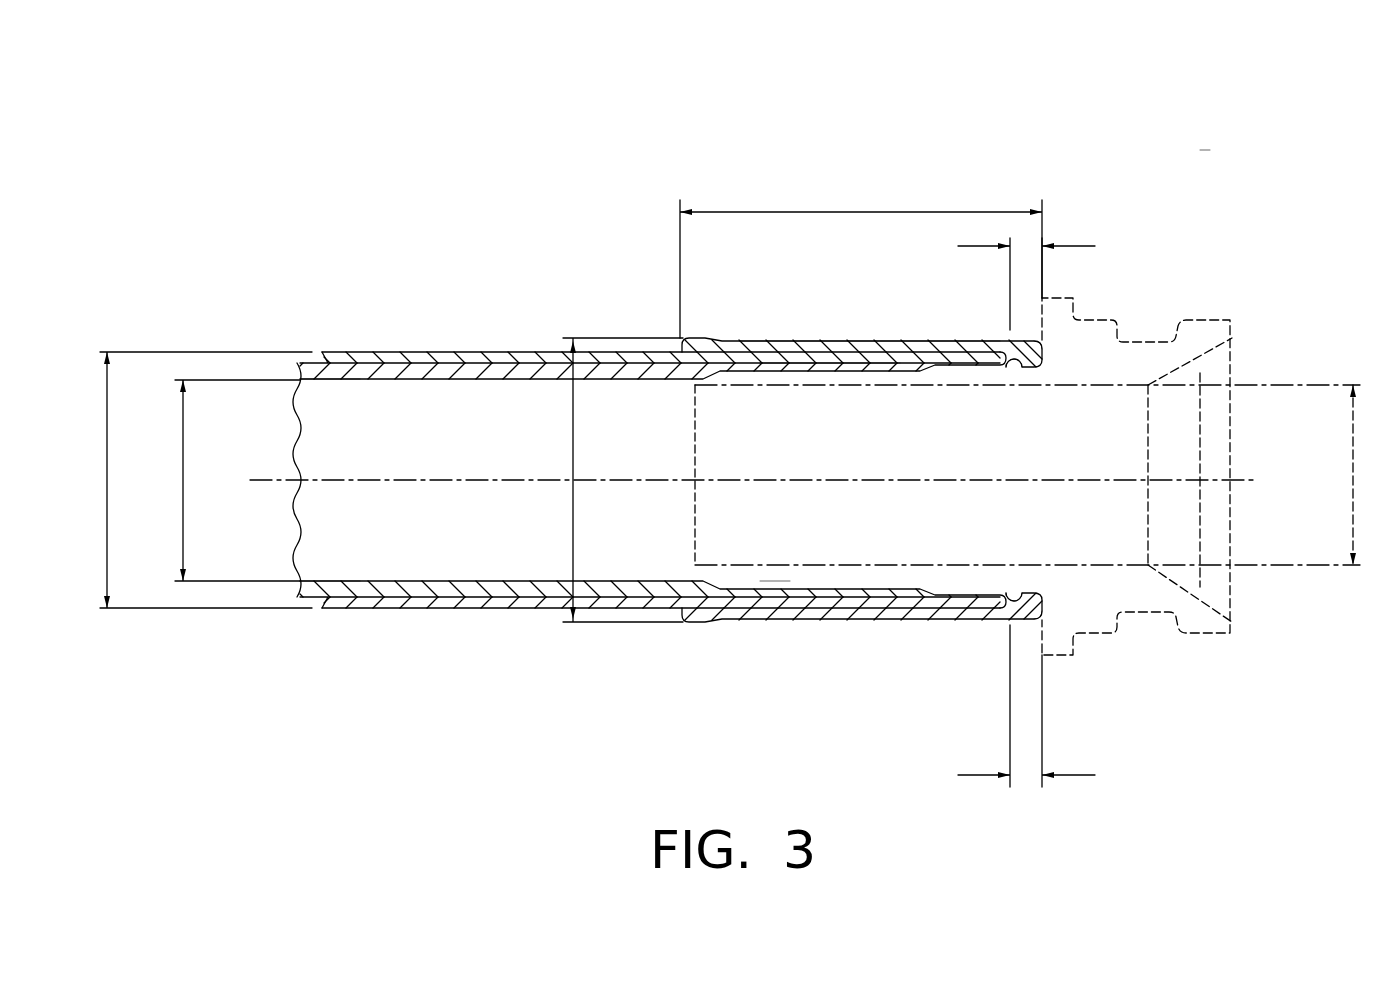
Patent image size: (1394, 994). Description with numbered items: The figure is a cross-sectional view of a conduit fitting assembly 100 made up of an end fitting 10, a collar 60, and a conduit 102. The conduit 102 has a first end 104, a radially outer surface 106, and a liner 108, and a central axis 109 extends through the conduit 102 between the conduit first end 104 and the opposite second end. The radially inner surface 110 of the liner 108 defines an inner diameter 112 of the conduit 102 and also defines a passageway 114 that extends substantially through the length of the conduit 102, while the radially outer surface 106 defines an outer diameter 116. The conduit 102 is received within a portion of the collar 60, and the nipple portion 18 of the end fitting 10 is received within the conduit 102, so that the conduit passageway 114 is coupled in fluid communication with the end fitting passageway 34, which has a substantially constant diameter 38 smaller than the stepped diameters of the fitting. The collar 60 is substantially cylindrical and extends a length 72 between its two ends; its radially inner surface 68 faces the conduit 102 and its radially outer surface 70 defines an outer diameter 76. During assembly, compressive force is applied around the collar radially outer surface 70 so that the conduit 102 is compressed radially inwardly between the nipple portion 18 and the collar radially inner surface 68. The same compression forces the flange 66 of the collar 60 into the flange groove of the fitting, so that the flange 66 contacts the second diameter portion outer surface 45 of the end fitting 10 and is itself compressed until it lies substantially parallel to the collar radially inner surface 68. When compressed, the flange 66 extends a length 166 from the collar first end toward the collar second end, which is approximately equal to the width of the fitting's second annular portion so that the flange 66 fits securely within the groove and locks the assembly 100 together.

The end fitting 10 is at (1058, 662).
The nipple portion 18 is at (772, 577).
The passageway 34 is at (724, 498).
The substantially constant diameter 38 is at (1353, 497).
The second diameter portion outer surface 45 is at (1030, 338).
The collar 60 is at (751, 342).
The flange 66 is at (1020, 366).
The radially inner surface 68 is at (802, 358).
The radially outer surface 70 is at (833, 342).
The length 72 is at (862, 212).
The outer diameter 76 is at (573, 454).
The conduit fitting assembly 100 is at (1215, 138).
The conduit 102 is at (395, 618).
The first end 104 is at (812, 606).
The radially outer surface 106 is at (427, 613).
The liner 108 is at (378, 368).
The central axis 109 is at (278, 483).
The radially inner surface 110 is at (408, 381).
The inner diameter 112 is at (183, 460).
The passageway 114 is at (371, 542).
The outer diameter 116 is at (107, 478).
The length 166 is at (1060, 246).